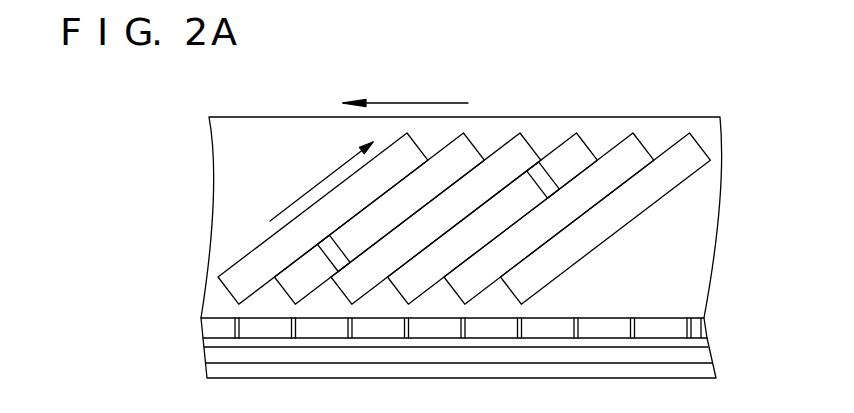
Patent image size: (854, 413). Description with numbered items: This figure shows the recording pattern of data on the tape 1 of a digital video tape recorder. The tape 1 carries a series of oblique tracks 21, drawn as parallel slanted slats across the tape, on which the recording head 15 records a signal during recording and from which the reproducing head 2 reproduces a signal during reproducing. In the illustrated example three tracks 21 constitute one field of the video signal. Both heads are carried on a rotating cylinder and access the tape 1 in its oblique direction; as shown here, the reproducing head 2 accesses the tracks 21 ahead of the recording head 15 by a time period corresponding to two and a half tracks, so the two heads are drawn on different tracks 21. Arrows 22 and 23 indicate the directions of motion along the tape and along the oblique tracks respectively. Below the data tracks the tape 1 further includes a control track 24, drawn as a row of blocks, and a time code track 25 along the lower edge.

The tape 1 is at (695, 117).
The reproducing head 2 is at (536, 174).
The recording head 15 is at (338, 248).
The tracks 21 is at (603, 242).
The direction arrow 22 is at (385, 103).
The direction arrow 23 is at (297, 198).
The control track 24 is at (703, 330).
The time code track 25 is at (707, 352).